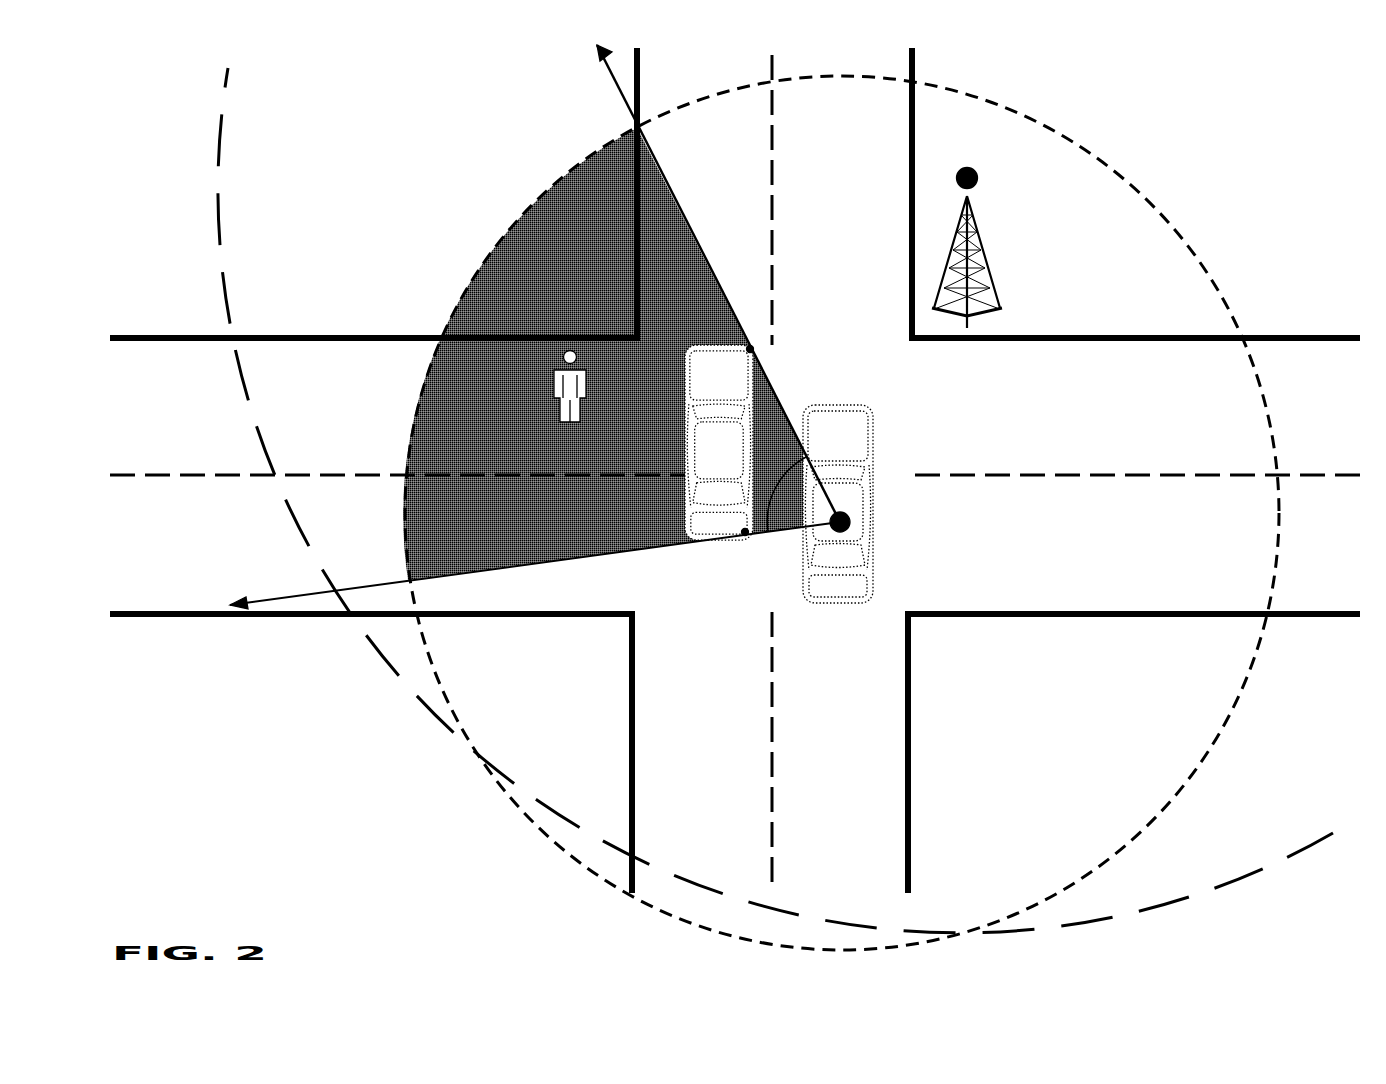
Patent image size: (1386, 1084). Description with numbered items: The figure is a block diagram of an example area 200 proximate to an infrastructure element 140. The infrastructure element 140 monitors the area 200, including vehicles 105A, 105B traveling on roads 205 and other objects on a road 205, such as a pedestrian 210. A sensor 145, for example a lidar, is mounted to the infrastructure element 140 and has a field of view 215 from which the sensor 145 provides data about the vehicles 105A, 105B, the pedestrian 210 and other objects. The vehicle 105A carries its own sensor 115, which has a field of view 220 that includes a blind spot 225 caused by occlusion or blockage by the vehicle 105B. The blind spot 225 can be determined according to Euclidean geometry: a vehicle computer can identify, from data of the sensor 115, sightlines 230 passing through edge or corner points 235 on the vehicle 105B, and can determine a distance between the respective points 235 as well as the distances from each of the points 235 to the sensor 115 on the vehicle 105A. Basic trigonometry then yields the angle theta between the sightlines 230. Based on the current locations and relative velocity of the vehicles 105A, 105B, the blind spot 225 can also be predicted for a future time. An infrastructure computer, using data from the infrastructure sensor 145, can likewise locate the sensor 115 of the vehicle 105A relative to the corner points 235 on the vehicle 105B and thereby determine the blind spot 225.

The area 200 is at (171, 93).
The road 205 is at (717, 73).
The pedestrian 210 is at (590, 400).
The field of view 215 is at (222, 214).
The field of view 220 is at (1196, 742).
The blind spot 225 is at (565, 278).
The sightlines 230 is at (670, 190).
The corner points 235 is at (754, 350).
The vehicle 105A is at (861, 458).
The vehicle 105B is at (741, 511).
The sensor 115 is at (851, 521).
The infrastructure element 140 is at (978, 256).
The sensor 145 is at (978, 178).